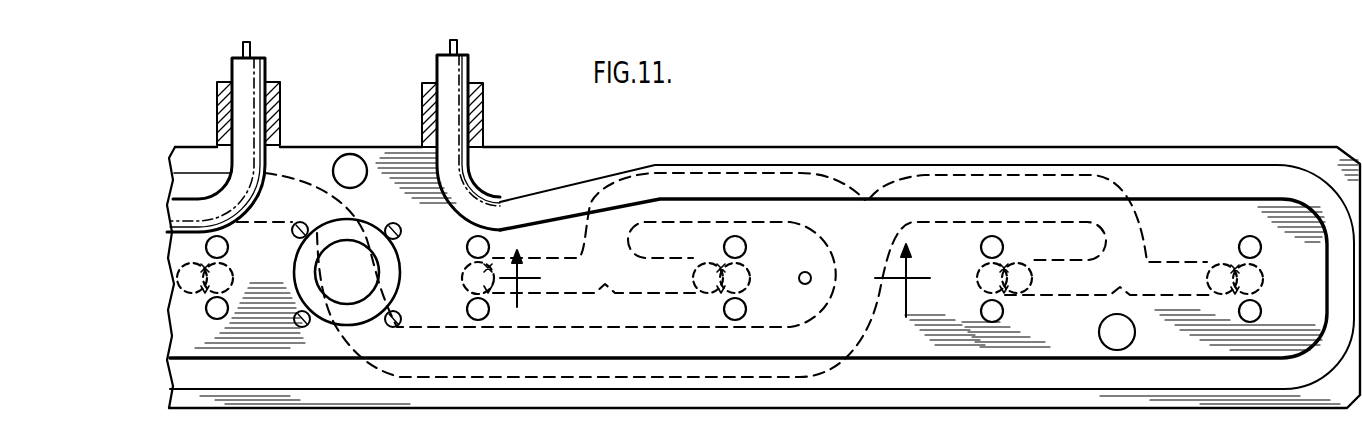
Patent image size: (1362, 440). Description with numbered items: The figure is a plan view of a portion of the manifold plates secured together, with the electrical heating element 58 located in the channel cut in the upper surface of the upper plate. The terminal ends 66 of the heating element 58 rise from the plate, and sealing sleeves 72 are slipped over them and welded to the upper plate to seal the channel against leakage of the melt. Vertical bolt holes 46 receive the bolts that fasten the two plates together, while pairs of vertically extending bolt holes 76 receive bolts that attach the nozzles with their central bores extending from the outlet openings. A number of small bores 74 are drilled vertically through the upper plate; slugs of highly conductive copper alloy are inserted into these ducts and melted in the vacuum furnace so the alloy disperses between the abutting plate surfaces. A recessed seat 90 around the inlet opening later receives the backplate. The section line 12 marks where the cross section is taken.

The section line 12- 12 is at (712, 280).
The vertical bolt hole 46 is at (352, 153).
The electrical heating element 58 is at (565, 188).
The terminal end 66 is at (252, 46).
The sealing sleeve 72 is at (281, 106).
The small bore 74 is at (828, 257).
The bolt hole pair 76 is at (208, 308).
The recessed seat 90 is at (389, 258).